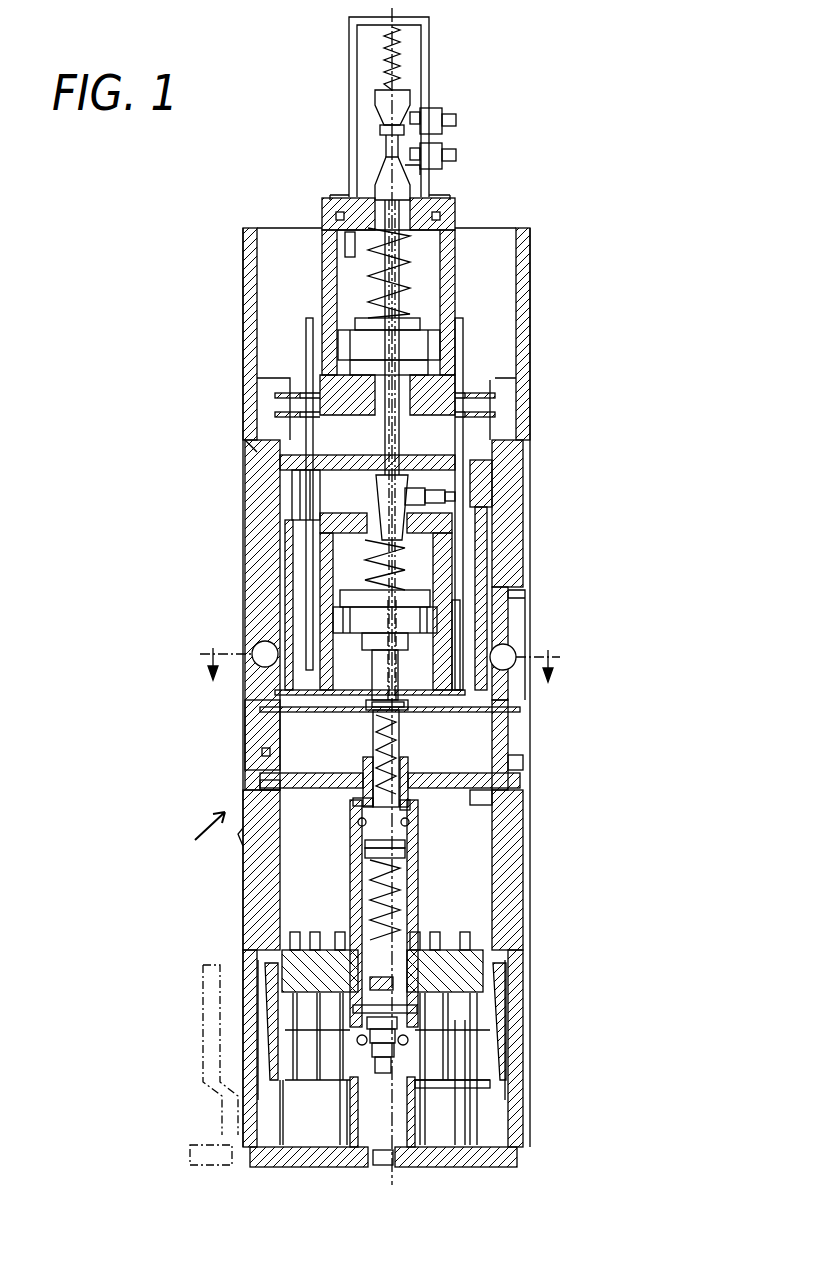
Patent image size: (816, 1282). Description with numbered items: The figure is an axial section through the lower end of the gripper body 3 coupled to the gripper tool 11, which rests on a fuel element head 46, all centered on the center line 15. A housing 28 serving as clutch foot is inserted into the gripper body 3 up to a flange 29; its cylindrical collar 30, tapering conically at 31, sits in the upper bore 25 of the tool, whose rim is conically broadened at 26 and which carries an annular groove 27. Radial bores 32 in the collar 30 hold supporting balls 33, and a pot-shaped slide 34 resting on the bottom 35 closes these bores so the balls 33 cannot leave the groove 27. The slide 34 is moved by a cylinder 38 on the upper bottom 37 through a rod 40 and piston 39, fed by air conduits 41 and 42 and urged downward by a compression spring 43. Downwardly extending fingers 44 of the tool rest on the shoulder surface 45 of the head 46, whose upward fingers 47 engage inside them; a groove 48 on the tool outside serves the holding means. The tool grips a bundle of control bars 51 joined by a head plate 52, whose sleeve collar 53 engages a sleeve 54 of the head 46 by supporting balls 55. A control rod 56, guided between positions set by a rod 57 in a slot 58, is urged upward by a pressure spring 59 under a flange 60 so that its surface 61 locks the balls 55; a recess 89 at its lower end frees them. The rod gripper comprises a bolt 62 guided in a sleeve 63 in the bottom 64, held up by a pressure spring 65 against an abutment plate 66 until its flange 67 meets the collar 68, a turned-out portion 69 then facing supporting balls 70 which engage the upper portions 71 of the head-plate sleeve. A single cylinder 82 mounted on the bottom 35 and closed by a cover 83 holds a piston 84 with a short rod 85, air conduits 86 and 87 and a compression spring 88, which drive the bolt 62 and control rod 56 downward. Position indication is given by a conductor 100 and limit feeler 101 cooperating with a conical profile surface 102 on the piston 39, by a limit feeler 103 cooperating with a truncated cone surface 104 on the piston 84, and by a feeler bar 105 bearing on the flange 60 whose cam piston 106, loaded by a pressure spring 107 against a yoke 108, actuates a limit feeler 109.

The gripper body 3 is at (245, 258).
The gripper tool 11 is at (193, 834).
The center line 15 is at (386, 432).
The bore 25 is at (262, 785).
The conical broadening 26 is at (525, 600).
The annular groove 27 is at (518, 656).
The housing 28 is at (280, 395).
The flange 29 is at (522, 580).
The collar 30 is at (270, 720).
The conical taper 31 is at (520, 765).
The radial bores 32 is at (508, 720).
The supporting balls 33 is at (508, 680).
The slide 34 is at (285, 445).
The bottom 35 is at (262, 755).
The upper bottom 37 is at (480, 400).
The cylinder 38 is at (450, 222).
The piston 39 is at (430, 345).
The rod 40 is at (400, 432).
The air conveying conduit 41 is at (450, 288).
The air conveying conduit 42 is at (380, 282).
The compression spring 43 is at (405, 265).
The fingers 44 is at (245, 910).
The shoulder surface 45 is at (265, 1080).
The fuel element head 46 is at (245, 1120).
The fingers 47 is at (268, 980).
The groove 48 is at (243, 835).
The control bars 51 is at (480, 1135).
The head plate 52 is at (325, 950).
The collar 53 is at (382, 1110).
The sleeve 54 is at (418, 1100).
The supporting balls 55 is at (408, 1040).
The control rod 56 is at (492, 910).
The rod 57 is at (417, 1010).
The slot 58 is at (395, 985).
The pressure spring 59 is at (395, 880).
The flange 60 is at (405, 855).
The circumferential surface 61 is at (385, 1150).
The bolt 62 is at (410, 760).
The sleeve 63 is at (363, 764).
The bottom 64 is at (482, 790).
The pressure spring 65 is at (378, 725).
The abutment plate 66 is at (404, 718).
The flange 67 is at (365, 848).
The collar 68 is at (408, 830).
The turned-out portion 69 is at (360, 806).
The supporting balls 70 is at (410, 810).
The upper portions of the sleeve 71 is at (362, 825).
The cylinder 82 is at (455, 640).
The cover 83 is at (345, 522).
The piston 84 is at (437, 620).
The rod 85 is at (378, 658).
The air conveying conduit 86 is at (310, 320).
The air conveying conduit 87 is at (463, 328).
The compression spring 88 is at (440, 545).
The recess 89 is at (400, 1020).
The conductor 100 is at (452, 155).
The limit feeler 101 is at (420, 170).
The conical profile surface 102 is at (380, 172).
The limit feeler 103 is at (410, 490).
The truncated cone-shaped profile surface 104 is at (380, 478).
The feeler bar 105 is at (388, 140).
The cam piston 106 is at (410, 98).
The pressure spring 107 is at (385, 45).
The yoke 108 is at (425, 28).
The limit feeler 109 is at (440, 115).